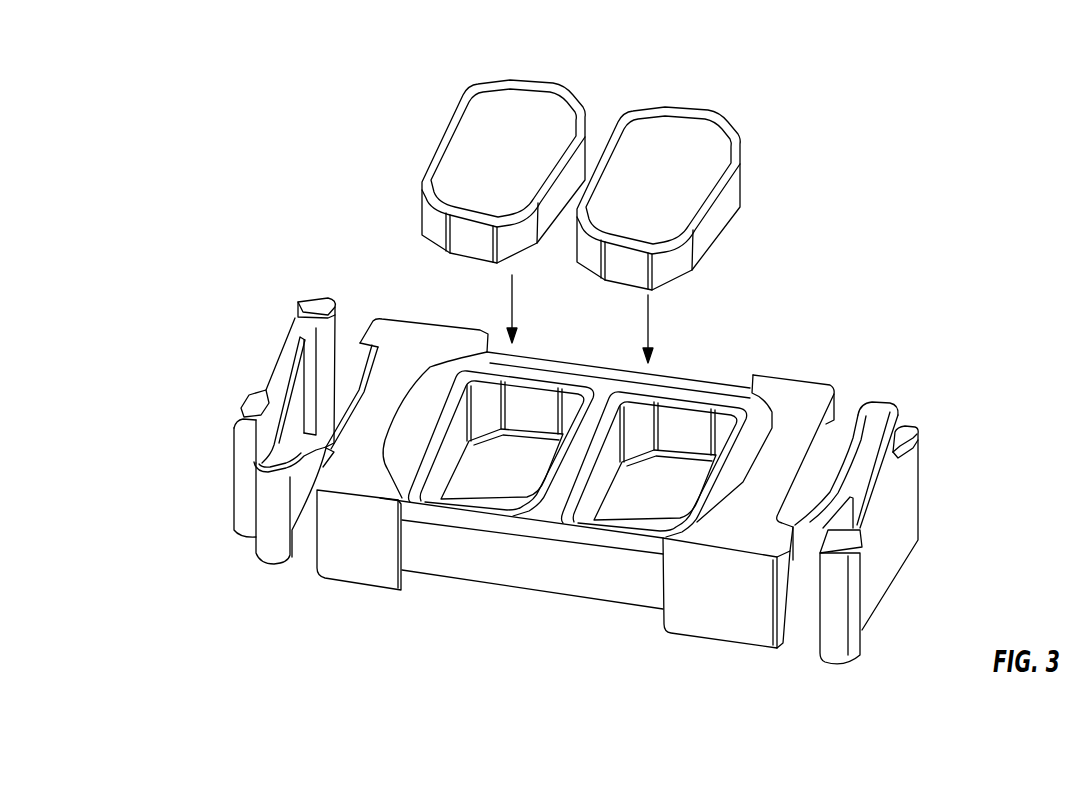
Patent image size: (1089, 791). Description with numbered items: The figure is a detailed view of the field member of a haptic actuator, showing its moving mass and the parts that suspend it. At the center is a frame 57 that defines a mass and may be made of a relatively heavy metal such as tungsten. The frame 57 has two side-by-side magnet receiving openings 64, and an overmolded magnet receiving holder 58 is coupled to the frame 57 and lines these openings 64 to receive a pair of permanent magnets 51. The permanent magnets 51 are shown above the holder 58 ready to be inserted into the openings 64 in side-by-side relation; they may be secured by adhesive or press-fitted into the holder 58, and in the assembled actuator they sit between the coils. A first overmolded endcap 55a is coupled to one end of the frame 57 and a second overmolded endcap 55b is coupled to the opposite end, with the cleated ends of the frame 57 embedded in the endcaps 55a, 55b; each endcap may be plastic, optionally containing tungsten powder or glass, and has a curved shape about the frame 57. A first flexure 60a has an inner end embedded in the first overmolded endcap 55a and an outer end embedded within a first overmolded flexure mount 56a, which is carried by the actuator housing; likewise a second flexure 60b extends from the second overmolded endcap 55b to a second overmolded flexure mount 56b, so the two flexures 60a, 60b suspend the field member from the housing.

The permanent magnets 51 is at (522, 137).
The first overmolded endcap 55a is at (343, 587).
The second overmolded endcap 55b is at (750, 648).
The first overmolded flexure mount 56a is at (270, 380).
The second overmolded flexure mount 56b is at (850, 662).
The frame 57 is at (598, 602).
The overmolded magnet receiving holder 58 is at (473, 377).
The first flexure 60a is at (256, 484).
The second flexure 60b is at (885, 537).
The magnet receiving openings 64 is at (480, 483).